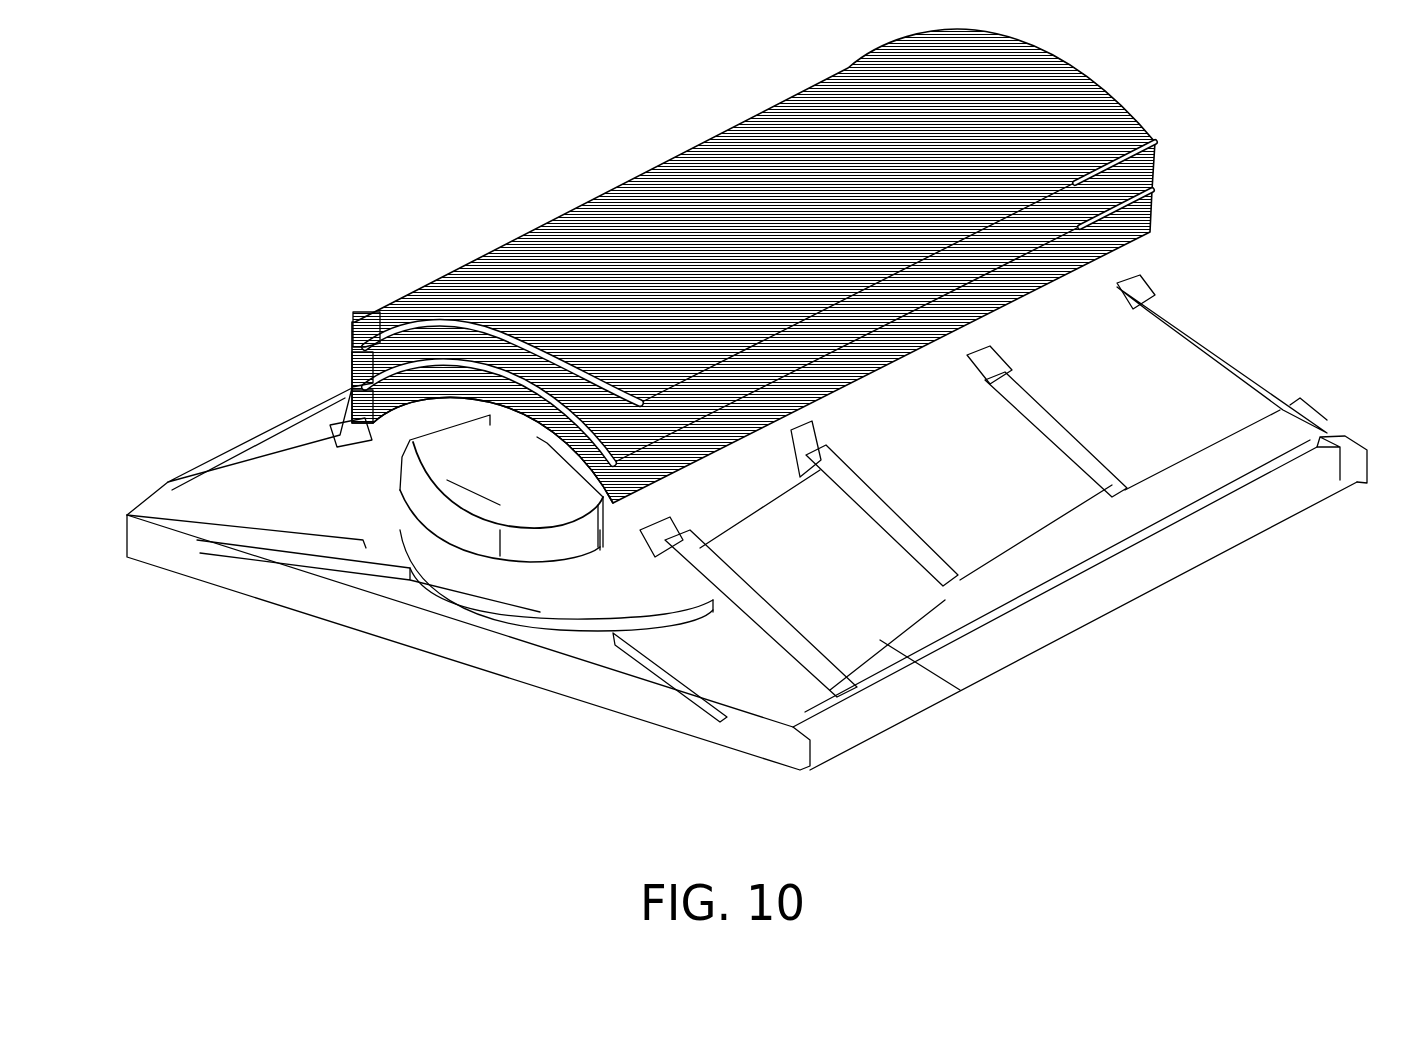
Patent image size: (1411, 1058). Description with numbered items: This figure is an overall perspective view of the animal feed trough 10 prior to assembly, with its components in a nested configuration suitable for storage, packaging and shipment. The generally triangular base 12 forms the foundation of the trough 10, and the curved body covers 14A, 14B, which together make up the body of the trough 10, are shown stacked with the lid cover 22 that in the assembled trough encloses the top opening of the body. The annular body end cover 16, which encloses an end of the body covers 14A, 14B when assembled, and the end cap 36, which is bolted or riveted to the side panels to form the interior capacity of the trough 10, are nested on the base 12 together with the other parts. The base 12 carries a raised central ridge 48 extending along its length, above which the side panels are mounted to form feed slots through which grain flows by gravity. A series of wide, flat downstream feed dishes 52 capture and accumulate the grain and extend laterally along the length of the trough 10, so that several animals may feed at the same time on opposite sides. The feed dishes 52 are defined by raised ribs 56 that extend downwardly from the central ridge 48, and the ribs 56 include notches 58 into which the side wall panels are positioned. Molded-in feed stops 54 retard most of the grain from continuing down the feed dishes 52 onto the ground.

The animal feed trough 10 is at (508, 70).
The base 12 is at (232, 580).
The curved body cover 14A is at (420, 300).
The curved body cover 14B is at (372, 318).
The annular body end cover 16 is at (507, 578).
The lid cover 22 is at (348, 405).
The end cap 36 is at (435, 600).
The raised central ridge 48 is at (510, 427).
The feed dishes 52 is at (335, 428).
The feed stops 54 is at (302, 408).
The raised ribs 56 is at (748, 588).
The notches 58 is at (665, 545).